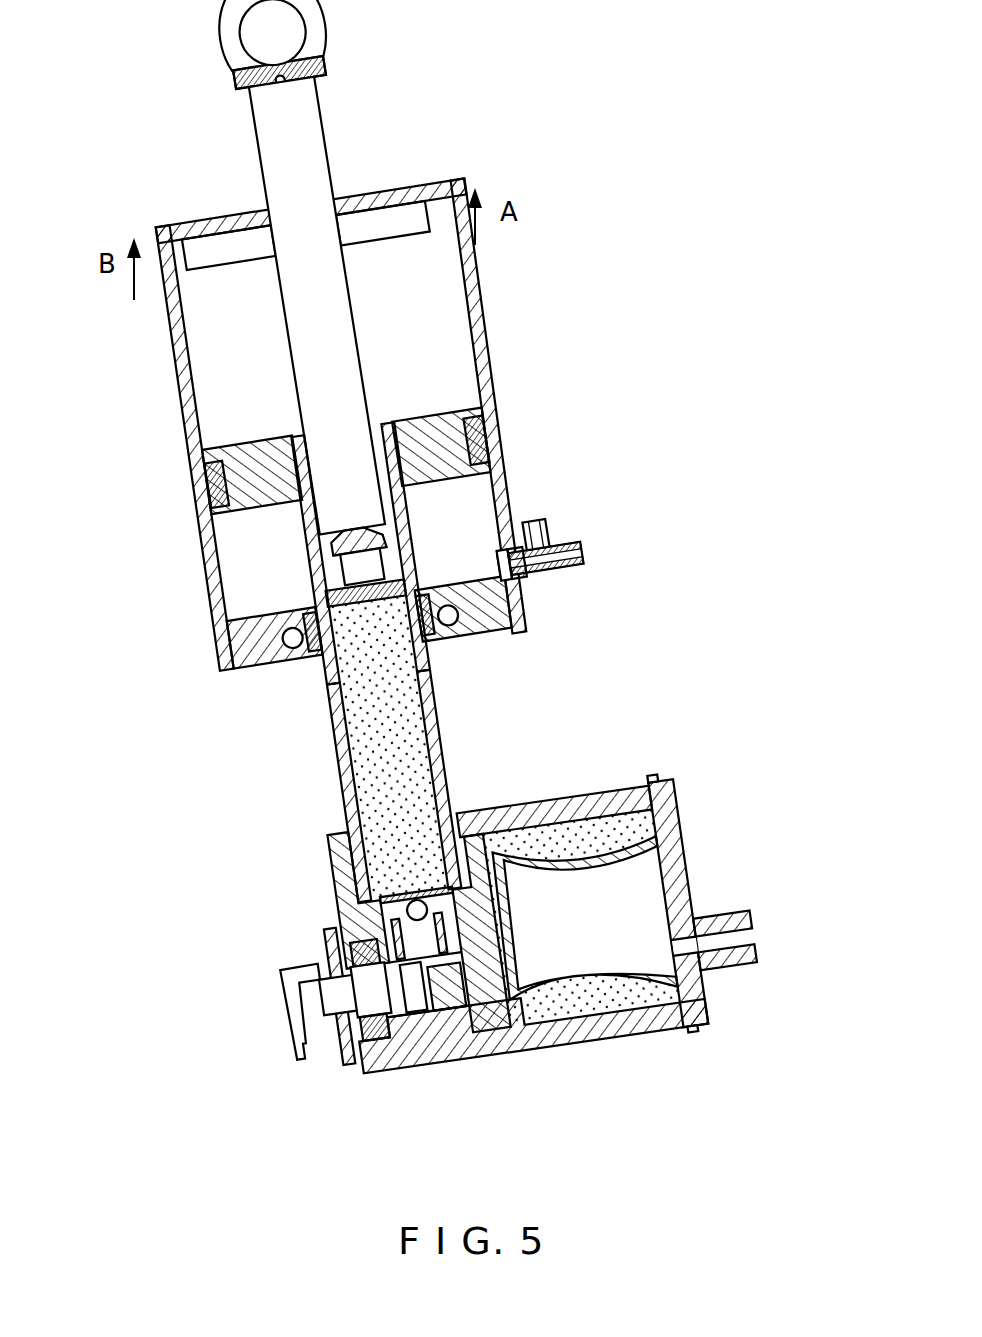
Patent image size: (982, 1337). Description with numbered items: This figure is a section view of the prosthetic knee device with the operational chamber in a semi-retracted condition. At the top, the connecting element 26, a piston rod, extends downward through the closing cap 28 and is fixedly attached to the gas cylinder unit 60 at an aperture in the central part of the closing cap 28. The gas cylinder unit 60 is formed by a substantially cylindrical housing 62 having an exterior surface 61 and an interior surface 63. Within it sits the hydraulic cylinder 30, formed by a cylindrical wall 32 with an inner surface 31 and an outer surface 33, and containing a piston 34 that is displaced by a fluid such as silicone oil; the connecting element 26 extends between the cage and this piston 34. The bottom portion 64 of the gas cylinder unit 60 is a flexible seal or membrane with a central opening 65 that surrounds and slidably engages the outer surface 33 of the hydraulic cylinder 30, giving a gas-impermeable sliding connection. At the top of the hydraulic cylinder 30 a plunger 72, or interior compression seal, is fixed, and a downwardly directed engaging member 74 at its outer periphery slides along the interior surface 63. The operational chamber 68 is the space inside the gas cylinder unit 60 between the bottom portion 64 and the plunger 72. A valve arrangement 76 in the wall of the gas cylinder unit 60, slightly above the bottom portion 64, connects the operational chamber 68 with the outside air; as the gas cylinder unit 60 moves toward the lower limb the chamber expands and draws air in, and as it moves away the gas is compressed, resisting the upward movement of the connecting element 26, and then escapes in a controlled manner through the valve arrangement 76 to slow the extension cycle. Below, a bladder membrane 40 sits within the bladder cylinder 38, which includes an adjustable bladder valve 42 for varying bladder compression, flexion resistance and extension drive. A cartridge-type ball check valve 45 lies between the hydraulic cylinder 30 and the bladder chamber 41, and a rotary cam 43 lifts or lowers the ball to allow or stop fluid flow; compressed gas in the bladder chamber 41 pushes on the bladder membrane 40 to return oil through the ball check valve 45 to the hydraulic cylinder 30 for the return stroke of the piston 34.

The connecting element 26 is at (300, 97).
The closing cap 28 is at (425, 183).
The hydraulic cylinder 30 is at (290, 763).
The inner surface 31 is at (436, 797).
The cylindrical wall 32 is at (345, 797).
The outer surface 33 is at (330, 700).
The piston 34 is at (390, 655).
The bladder cylinder 38 is at (597, 1040).
The bladder membrane 40 is at (575, 975).
The bladder chamber 41 is at (583, 830).
The bladder valve 42 is at (752, 957).
The rotary cam 43 is at (290, 1035).
The ball check valve 45 is at (465, 1018).
The gas cylinder unit 60 is at (500, 270).
The exterior surface 61 is at (165, 334).
The cylindrical housing 62 is at (487, 385).
The interior surface 63 is at (462, 323).
The bottom portion 64 is at (262, 655).
The central opening 65 is at (430, 635).
The operational chamber 68 is at (455, 520).
The plunger 72 is at (255, 470).
The engaging member 74 is at (242, 515).
The valve arrangement 76 is at (578, 565).